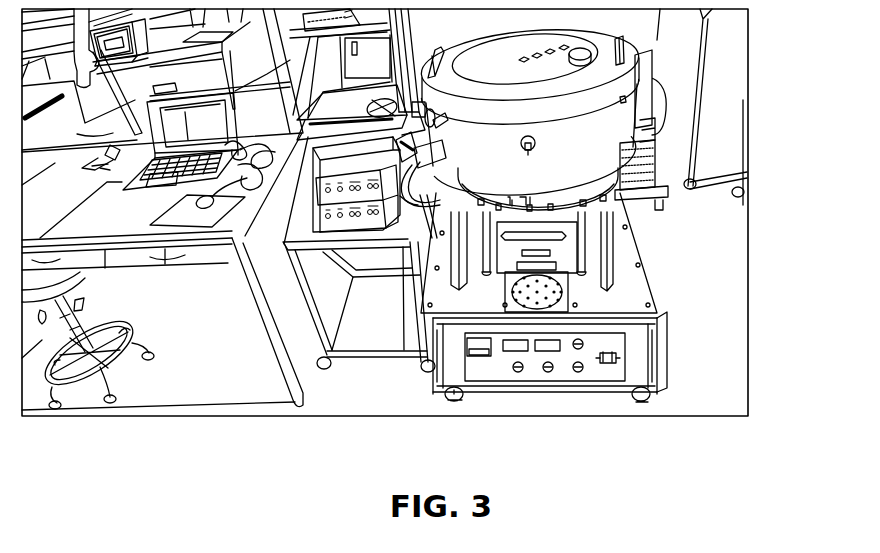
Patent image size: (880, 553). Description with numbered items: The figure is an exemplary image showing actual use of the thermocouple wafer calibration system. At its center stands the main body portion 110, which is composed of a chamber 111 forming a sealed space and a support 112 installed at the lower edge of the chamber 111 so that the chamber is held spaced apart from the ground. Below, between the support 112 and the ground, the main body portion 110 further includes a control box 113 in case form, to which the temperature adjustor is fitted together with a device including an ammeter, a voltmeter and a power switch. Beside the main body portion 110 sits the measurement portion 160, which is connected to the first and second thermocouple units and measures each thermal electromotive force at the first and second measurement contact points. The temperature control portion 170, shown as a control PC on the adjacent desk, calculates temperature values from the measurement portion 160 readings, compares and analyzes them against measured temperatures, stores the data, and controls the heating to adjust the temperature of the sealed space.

The main body portion 110 is at (634, 212).
The chamber 111 is at (590, 152).
The support 112 is at (610, 245).
The control box 113 is at (804, 275).
The measurement portion 160 is at (352, 155).
The temperature control portion 170 is at (172, 180).